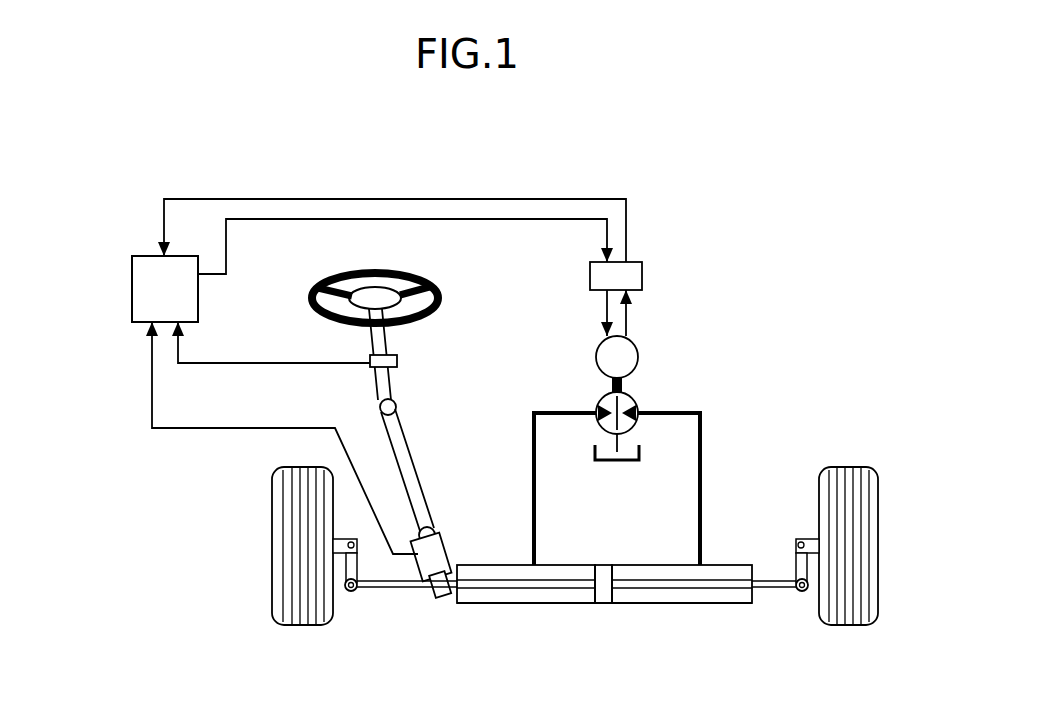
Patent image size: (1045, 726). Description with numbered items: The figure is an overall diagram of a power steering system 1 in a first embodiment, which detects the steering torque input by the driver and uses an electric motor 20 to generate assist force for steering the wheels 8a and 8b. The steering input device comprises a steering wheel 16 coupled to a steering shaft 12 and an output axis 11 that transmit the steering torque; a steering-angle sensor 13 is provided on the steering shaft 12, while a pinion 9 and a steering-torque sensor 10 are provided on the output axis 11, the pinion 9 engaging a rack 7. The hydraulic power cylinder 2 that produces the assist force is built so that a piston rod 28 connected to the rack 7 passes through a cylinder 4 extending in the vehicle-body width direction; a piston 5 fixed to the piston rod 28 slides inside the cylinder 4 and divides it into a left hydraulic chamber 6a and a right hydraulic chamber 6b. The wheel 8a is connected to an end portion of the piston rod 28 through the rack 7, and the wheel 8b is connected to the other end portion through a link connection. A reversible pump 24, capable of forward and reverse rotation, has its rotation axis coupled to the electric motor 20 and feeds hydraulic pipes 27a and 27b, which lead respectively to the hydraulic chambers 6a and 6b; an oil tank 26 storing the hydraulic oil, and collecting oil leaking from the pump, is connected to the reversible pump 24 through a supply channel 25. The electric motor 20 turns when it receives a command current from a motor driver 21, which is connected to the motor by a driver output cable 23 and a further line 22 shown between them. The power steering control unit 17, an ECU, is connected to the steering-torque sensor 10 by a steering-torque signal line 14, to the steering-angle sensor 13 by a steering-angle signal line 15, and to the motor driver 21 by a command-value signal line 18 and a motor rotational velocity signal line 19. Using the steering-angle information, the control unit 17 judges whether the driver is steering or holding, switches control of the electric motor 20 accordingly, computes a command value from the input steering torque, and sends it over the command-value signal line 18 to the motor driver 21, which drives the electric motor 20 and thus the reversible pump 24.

The power steering system 1 is at (812, 292).
The hydraulic power cylinder 2 is at (678, 612).
The cylinder 4 is at (643, 602).
The piston 5 is at (600, 602).
The left hydraulic chamber 6a is at (730, 602).
The right hydraulic chamber 6b is at (518, 600).
The rack 7 is at (383, 591).
The wheel 8a is at (303, 624).
The wheel 8b is at (848, 624).
The pinion 9 is at (443, 596).
The steering-torque sensor 10 is at (440, 550).
The output axis 11 is at (414, 481).
The steering shaft 12 is at (397, 387).
The steering-angle sensor 13 is at (398, 358).
The steering-torque signal line 14 is at (190, 429).
The steering-angle signal line 15 is at (254, 364).
The steering wheel 16 is at (382, 269).
The power steering control unit 17 is at (132, 280).
The command-value signal line 18 is at (495, 219).
The motor rotational velocity signal line 19 is at (384, 199).
The electric motor 20 is at (638, 350).
The motor driver 21 is at (642, 275).
The feedback line 22 is at (626, 315).
The driver output cable 23 is at (607, 307).
The reversible pump 24 is at (636, 402).
The supply channel 25 is at (627, 443).
The oil tank 26 is at (616, 462).
The hydraulic pipe 27a is at (533, 438).
The hydraulic pipe 27b is at (701, 463).
The piston rod 28 is at (781, 591).